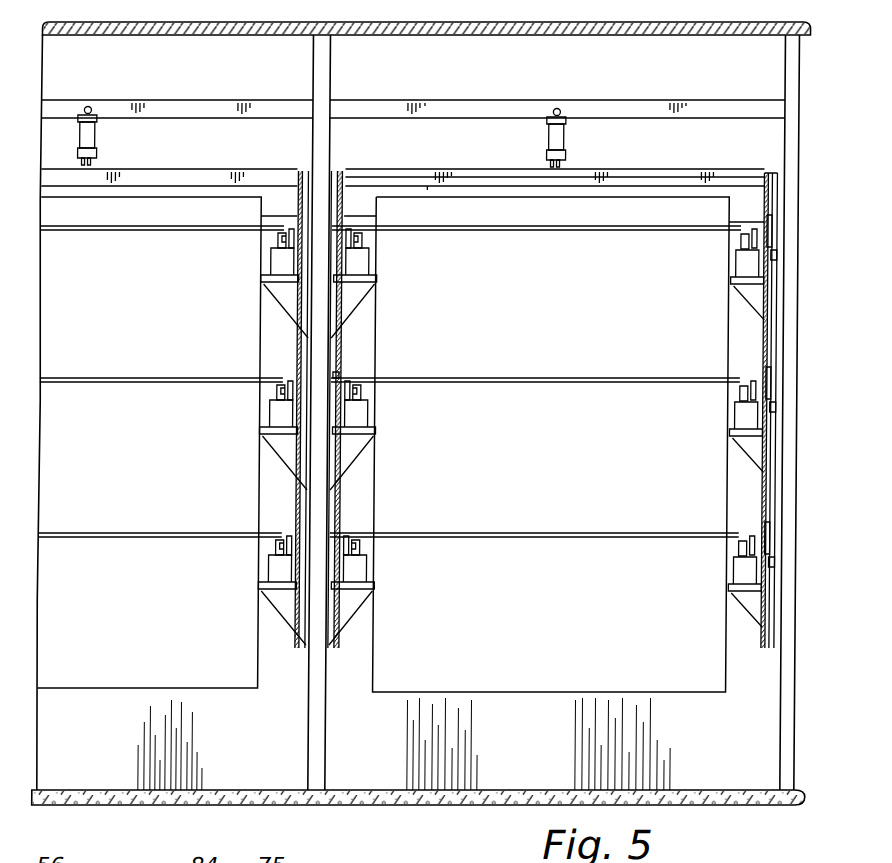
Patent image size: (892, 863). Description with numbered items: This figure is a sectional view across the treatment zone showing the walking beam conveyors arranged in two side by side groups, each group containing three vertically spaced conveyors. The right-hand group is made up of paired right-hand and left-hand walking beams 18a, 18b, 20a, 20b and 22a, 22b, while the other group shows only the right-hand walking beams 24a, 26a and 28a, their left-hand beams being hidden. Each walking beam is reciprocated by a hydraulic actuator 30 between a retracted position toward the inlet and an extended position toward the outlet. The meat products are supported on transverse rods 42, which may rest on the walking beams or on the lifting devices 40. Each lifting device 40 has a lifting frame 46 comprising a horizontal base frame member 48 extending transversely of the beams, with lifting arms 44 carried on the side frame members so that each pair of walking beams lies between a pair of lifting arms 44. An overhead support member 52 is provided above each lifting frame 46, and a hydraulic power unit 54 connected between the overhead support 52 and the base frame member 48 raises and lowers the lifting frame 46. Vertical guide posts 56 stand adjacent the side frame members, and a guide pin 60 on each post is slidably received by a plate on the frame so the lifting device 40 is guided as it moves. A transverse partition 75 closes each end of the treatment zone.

The right-hand walking beam 18a is at (739, 240).
The left-hand walking beam 18b is at (377, 238).
The right-hand walking beam 20a is at (740, 397).
The left-hand walking beam 20b is at (353, 392).
The right-hand walking beam 22a is at (738, 550).
The left-hand walking beam 22b is at (362, 546).
The right-hand walking beam 24a is at (278, 241).
The right-hand walking beam 26a is at (272, 392).
The right-hand walking beam 28a is at (273, 546).
The hydraulic actuator 30 is at (272, 263).
The lifting device 40 is at (141, 169).
The transverse rod 42 is at (140, 228).
The lifting arm 44 is at (347, 233).
The lifting frame 46 is at (432, 167).
The horizontal base frame member 48 is at (500, 181).
The overhead support member 52 is at (466, 108).
The hydraulic power unit 54 is at (560, 147).
The vertical guide post 56 is at (323, 78).
The guide pin 60 is at (341, 372).
The transverse partition 75 is at (520, 770).